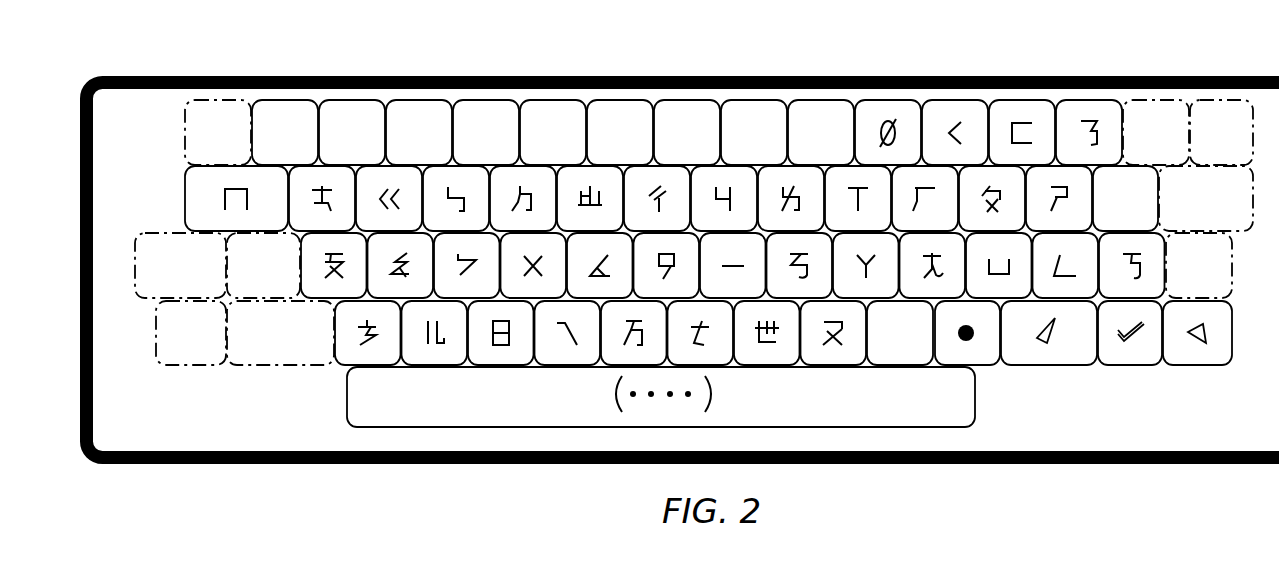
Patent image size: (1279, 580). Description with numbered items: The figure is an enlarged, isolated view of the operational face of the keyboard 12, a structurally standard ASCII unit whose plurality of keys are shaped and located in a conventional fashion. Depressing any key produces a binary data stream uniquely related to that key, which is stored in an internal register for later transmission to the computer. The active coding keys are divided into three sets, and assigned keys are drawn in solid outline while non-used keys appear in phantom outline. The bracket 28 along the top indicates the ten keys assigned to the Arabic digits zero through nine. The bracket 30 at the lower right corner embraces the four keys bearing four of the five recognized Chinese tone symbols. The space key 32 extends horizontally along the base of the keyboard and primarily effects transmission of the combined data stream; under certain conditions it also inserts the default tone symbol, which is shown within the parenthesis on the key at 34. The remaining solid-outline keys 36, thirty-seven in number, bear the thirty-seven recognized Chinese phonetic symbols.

The keyboard 12 is at (312, 36).
The bracket 28 is at (885, 62).
The bracket 30 is at (1186, 379).
The space key 32 is at (975, 418).
The default tone symbol 34 is at (725, 401).
The solid-outline keys 36 is at (992, 70).